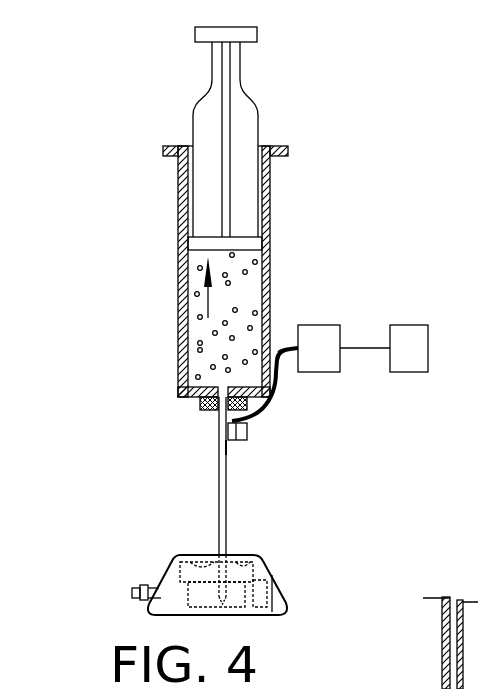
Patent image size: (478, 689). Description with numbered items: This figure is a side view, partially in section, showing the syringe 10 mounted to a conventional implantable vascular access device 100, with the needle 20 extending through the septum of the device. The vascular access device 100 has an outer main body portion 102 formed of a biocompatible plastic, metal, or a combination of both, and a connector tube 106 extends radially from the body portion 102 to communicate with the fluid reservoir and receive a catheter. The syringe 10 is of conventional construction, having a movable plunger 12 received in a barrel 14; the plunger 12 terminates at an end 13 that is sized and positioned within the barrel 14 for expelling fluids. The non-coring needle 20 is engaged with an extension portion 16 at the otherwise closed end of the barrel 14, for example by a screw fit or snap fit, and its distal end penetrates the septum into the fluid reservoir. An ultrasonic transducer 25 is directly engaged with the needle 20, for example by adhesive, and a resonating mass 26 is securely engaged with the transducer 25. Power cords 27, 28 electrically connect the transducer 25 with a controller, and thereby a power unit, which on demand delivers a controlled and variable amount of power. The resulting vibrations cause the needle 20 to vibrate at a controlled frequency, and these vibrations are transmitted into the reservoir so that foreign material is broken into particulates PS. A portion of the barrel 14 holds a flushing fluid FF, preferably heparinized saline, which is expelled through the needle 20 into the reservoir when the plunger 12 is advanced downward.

The syringe 10 is at (156, 109).
The plunger 12 is at (252, 102).
The end 13 is at (238, 248).
The barrel 14 is at (270, 257).
The extension portion 16 is at (216, 412).
The needle 20 is at (228, 545).
The ultrasonic transducer 25 is at (230, 444).
The resonating mass 26 is at (248, 440).
The power cord 27 is at (280, 340).
The power cord 28 is at (283, 357).
The vascular access device 100 is at (150, 550).
The main body portion 102 is at (265, 570).
The connector tube 106 is at (132, 590).
The flushing fluid FF is at (207, 323).
The particulates PS is at (211, 368).